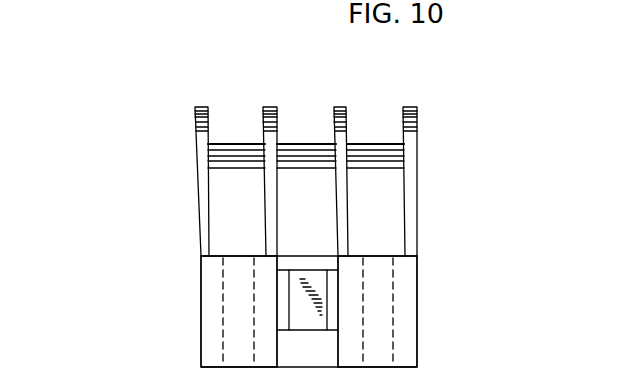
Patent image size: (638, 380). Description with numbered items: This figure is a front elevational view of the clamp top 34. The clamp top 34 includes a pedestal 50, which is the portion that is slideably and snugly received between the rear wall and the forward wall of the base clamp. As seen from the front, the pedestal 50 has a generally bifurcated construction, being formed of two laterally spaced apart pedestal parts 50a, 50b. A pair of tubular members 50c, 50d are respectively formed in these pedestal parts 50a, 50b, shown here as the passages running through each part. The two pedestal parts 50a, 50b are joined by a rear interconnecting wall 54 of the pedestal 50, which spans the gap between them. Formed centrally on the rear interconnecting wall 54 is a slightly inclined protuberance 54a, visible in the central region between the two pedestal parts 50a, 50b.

The clamp top 34 is at (260, 77).
The pedestal 50 is at (194, 288).
The pedestal part 50a is at (200, 270).
The pedestal part 50b is at (418, 357).
The tubular member 50c is at (224, 323).
The tubular member 50d is at (393, 275).
The rear interconnecting wall 54 is at (287, 270).
The inclined protuberance 54a is at (312, 270).